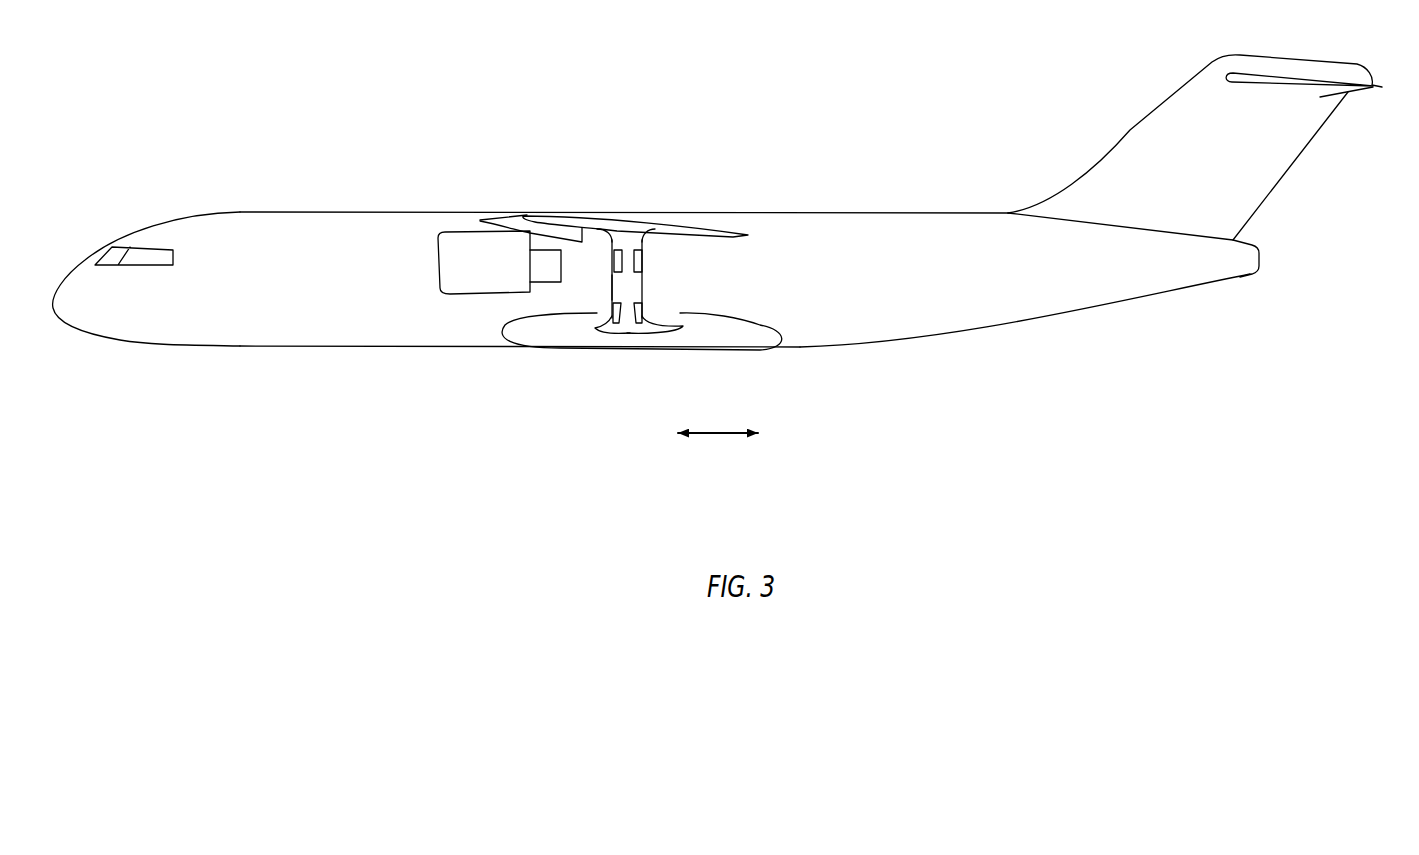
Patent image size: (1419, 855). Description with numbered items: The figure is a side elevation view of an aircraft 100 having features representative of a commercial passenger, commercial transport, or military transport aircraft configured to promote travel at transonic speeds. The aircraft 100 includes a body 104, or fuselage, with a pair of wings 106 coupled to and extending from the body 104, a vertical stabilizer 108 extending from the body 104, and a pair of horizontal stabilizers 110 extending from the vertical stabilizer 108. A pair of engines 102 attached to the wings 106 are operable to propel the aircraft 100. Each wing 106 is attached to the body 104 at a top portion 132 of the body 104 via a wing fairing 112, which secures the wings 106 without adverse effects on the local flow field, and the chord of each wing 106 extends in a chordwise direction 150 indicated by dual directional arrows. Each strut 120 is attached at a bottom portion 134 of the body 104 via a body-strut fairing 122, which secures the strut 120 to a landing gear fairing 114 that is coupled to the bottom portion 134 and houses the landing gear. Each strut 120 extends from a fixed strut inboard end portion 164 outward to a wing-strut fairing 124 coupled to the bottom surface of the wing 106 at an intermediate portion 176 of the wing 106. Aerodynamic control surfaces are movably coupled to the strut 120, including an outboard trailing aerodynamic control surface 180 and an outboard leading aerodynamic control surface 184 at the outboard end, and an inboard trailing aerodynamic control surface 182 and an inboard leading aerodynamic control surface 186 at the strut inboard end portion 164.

The aircraft 100 is at (210, 103).
The engine 102 is at (452, 245).
The body 104 is at (237, 210).
The wing 106 is at (710, 222).
The vertical stabilizer 108 is at (1255, 165).
The horizontal stabilizer 110 is at (1265, 72).
The wing fairing 112 is at (480, 220).
The landing gear fairing 114 is at (718, 340).
The strut 120 is at (612, 292).
The body-strut fairing 122 is at (633, 330).
The wing-strut fairing 124 is at (606, 238).
The top portion 132 is at (305, 212).
The bottom portion 134 is at (347, 348).
The chordwise direction 150 is at (727, 444).
The strut inboard end portion 164 is at (626, 330).
The intermediate portion 176 is at (643, 220).
The outboard trailing aerodynamic control surface 180 is at (648, 258).
The inboard trailing aerodynamic control surface 182 is at (646, 305).
The outboard leading aerodynamic control surface 184 is at (612, 265).
The inboard leading aerodynamic control surface 186 is at (612, 313).